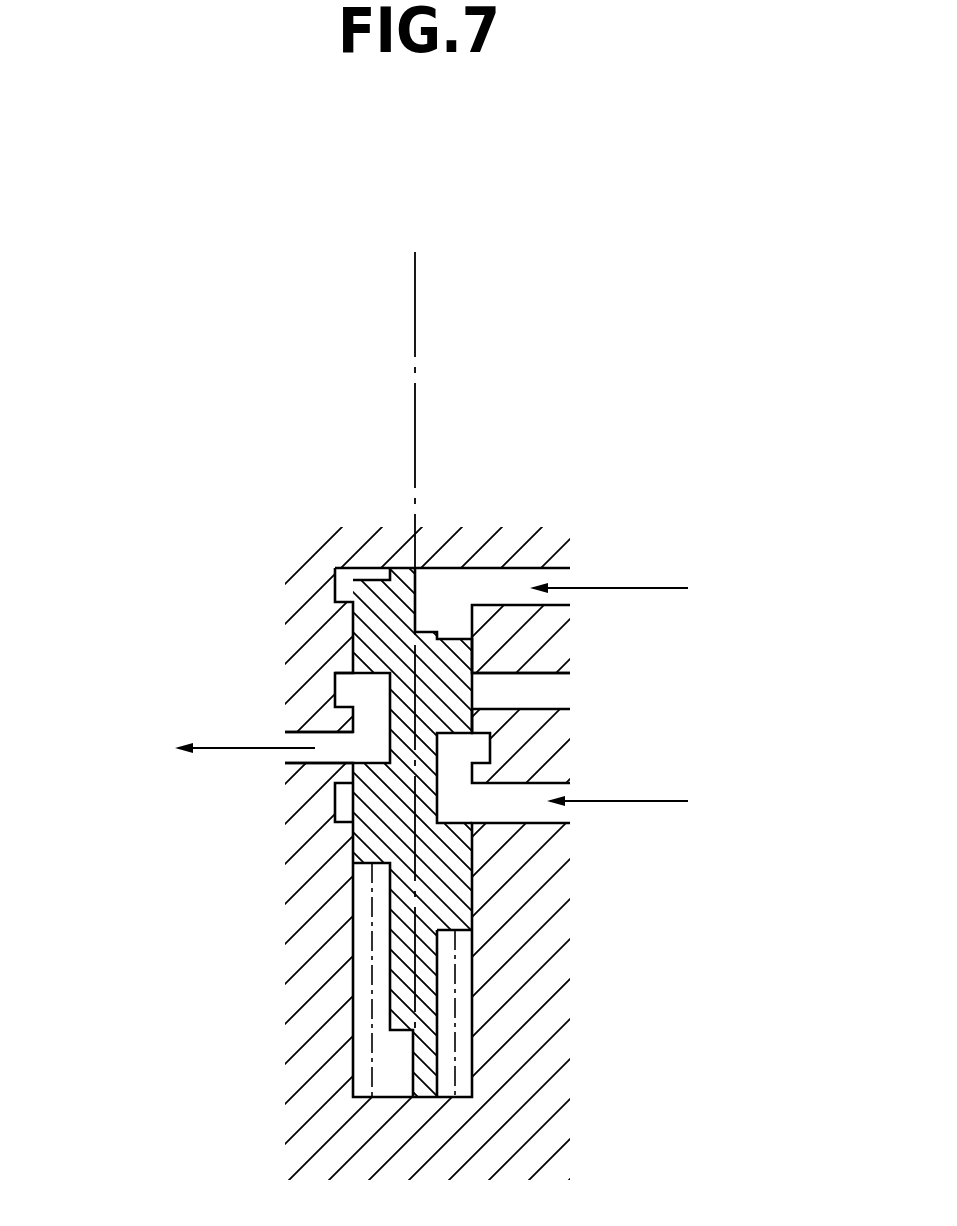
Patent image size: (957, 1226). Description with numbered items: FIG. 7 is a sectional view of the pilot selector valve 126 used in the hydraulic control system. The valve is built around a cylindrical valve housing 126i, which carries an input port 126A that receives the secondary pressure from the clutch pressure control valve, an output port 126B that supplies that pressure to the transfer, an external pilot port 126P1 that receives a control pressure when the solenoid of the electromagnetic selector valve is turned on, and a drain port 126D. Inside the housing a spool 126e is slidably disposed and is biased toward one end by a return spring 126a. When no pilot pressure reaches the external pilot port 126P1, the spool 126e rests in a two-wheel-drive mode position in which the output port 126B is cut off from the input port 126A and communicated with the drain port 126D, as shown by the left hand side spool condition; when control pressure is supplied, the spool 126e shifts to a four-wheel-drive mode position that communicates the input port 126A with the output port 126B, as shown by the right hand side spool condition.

The pilot selector valve 126 is at (258, 520).
The external pilot port 126P1 is at (502, 587).
The drain port 126D is at (540, 690).
The input port 126A is at (523, 807).
The output port 126B is at (328, 745).
The cylindrical valve housing 126i is at (310, 823).
The spool 126e is at (373, 845).
The return spring 126a is at (373, 981).